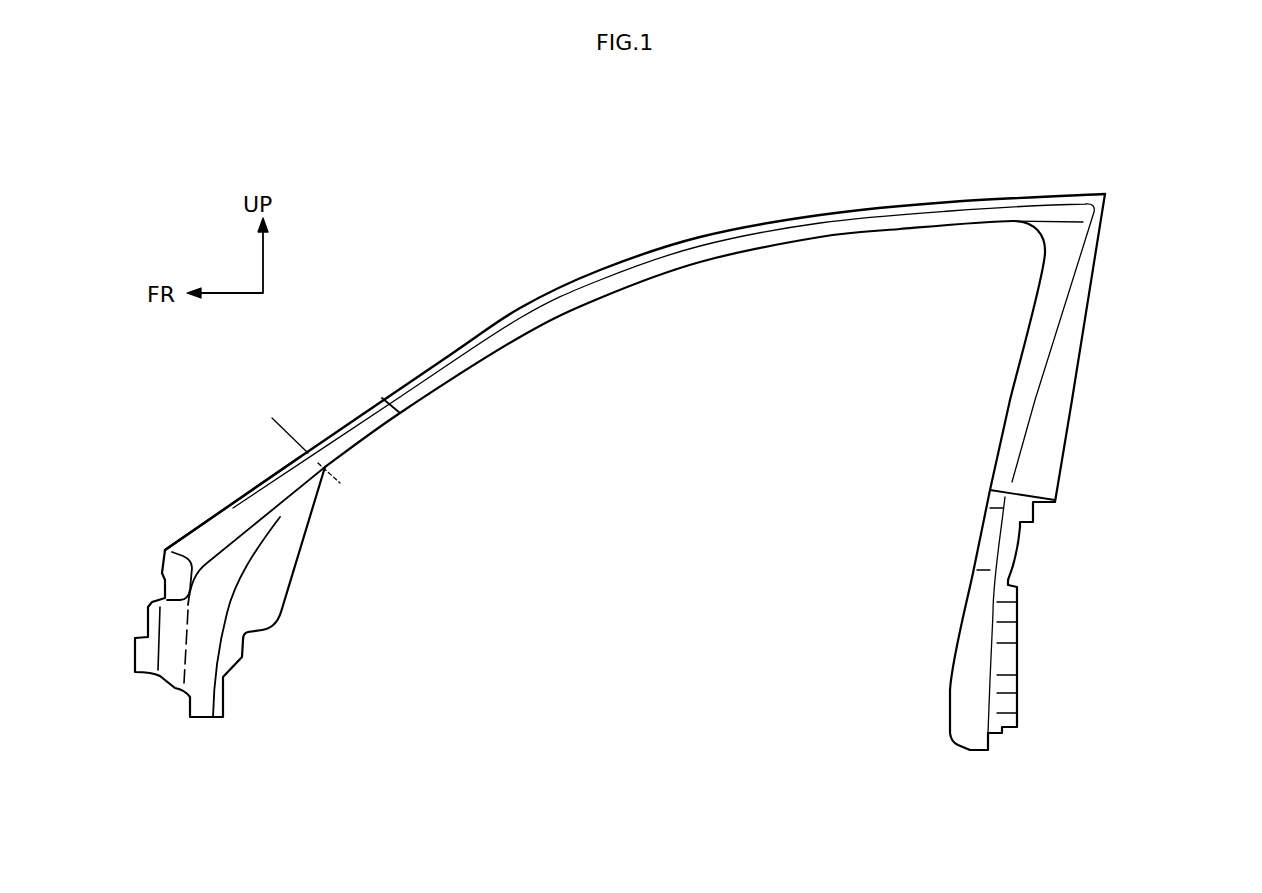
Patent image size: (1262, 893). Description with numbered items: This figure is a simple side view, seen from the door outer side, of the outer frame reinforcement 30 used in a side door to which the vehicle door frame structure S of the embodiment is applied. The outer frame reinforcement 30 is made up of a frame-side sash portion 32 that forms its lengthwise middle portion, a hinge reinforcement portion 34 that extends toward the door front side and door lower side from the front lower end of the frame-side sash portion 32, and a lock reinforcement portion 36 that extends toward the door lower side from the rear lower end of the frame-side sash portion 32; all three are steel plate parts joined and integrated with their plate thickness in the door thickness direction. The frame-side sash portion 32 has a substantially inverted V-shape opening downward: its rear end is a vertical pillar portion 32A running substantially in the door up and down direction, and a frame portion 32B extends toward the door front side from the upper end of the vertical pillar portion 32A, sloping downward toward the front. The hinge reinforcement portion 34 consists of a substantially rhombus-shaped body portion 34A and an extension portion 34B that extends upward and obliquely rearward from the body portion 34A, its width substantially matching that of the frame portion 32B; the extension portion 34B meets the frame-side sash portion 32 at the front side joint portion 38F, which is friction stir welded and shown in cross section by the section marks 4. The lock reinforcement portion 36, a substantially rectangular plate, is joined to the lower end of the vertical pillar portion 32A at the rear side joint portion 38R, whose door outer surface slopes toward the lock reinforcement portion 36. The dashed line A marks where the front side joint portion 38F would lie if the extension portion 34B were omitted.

The outer frame reinforcement 30 is at (730, 157).
The frame-side sash portion 32 is at (689, 468).
The vertical pillar portion 32A is at (1080, 367).
The frame portion 32B is at (632, 258).
The hinge reinforcement portion 34 is at (267, 515).
The body portion 34A is at (207, 520).
The extension portion 34B is at (350, 420).
The lock reinforcement portion 36 is at (1013, 563).
The front side joint portion 38F is at (382, 398).
The rear side joint portion 38R is at (1033, 492).
The section line of FIG. 4 is at (368, 434).
The long dashed double-short dashed line A is at (340, 483).
The vehicle door frame structure S is at (473, 250).